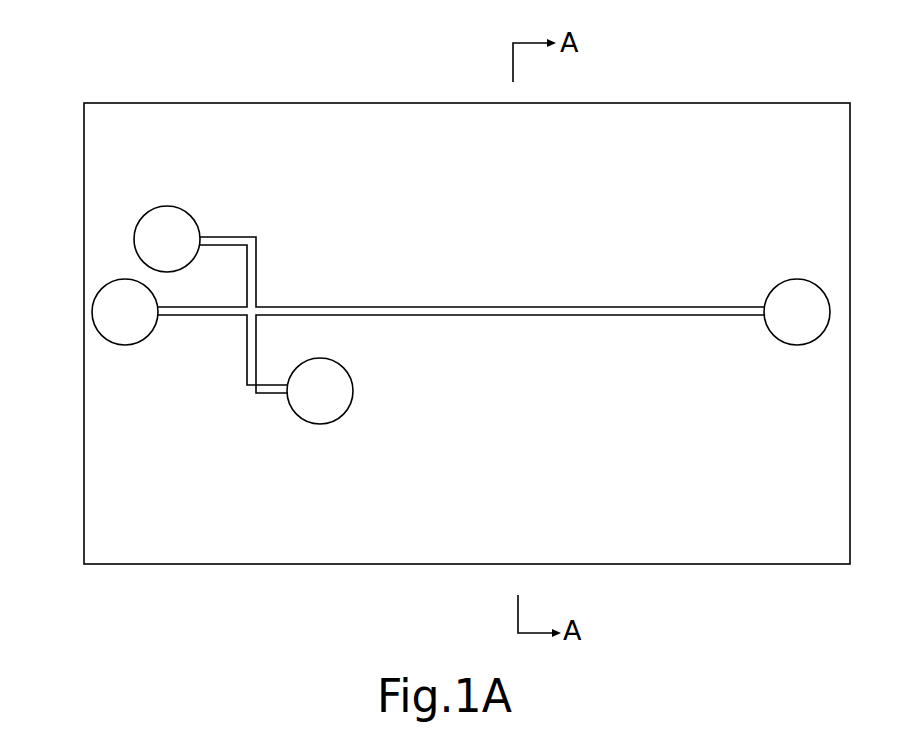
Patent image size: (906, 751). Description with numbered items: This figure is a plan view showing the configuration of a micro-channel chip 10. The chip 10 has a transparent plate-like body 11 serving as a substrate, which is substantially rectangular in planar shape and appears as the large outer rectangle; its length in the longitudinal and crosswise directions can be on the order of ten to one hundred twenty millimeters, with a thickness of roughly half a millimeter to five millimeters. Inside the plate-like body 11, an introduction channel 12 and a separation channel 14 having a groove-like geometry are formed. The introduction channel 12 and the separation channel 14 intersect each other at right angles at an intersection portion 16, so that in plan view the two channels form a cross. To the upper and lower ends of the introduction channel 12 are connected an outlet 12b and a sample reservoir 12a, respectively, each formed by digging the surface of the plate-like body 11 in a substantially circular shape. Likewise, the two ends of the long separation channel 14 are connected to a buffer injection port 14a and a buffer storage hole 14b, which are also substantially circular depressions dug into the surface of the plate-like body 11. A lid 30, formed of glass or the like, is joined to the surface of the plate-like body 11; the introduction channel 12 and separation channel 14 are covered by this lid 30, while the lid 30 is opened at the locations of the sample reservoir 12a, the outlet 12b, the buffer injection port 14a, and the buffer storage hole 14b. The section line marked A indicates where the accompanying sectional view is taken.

The micro-channel chip 10 is at (459, 315).
The plate-like body 11 is at (467, 291).
The lid 30 is at (775, 130).
The introduction channel 12 is at (258, 260).
The sample reservoir 12a is at (370, 400).
The outlet 12b is at (167, 206).
The separation channel 14 is at (555, 307).
The buffer injection port 14a is at (107, 279).
The buffer storage hole 14b is at (795, 280).
The intersection portion 16 is at (258, 305).